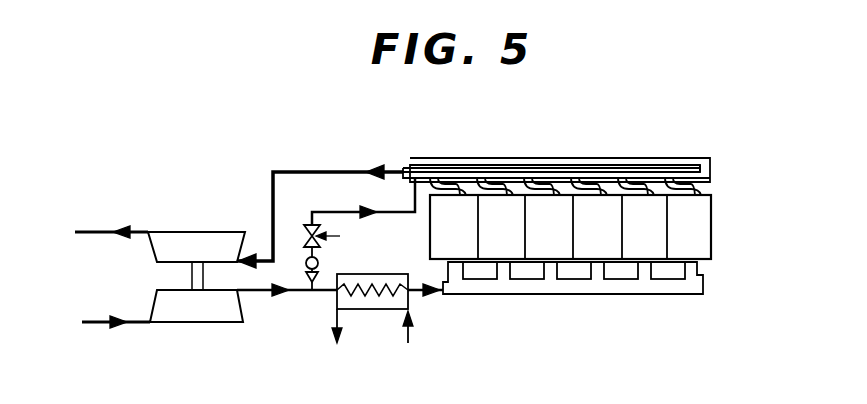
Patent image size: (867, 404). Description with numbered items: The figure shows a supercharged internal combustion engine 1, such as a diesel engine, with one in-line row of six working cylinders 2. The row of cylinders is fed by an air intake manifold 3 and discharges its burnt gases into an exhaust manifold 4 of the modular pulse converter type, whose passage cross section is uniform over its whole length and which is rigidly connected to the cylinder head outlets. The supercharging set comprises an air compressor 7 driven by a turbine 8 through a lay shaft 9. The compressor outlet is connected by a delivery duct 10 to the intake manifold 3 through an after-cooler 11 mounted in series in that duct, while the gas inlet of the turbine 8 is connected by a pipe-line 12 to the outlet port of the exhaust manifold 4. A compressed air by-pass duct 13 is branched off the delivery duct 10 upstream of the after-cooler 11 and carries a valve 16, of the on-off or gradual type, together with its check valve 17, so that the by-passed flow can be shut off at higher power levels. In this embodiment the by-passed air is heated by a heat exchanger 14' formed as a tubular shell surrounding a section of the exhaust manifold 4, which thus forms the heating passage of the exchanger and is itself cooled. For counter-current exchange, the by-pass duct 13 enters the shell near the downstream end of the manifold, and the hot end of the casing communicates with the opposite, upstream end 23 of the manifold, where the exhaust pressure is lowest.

The diesel engine 1 is at (712, 232).
The working cylinders 2 is at (572, 227).
The air intake manifold 3 is at (602, 296).
The exhaust manifold 4 is at (642, 165).
The air compressor 7 is at (178, 320).
The turbine 8 is at (208, 240).
The lay shaft 9 is at (194, 278).
The delivery duct 10 is at (255, 295).
The after-cooler 11 is at (360, 310).
The pipe-line 12 is at (304, 171).
The compressed air by-pass duct 13 is at (333, 211).
The heat exchanger 14' is at (556, 146).
The valve 16 is at (306, 236).
The check valve 17 is at (319, 265).
The upstream end of the manifold 23 is at (703, 166).